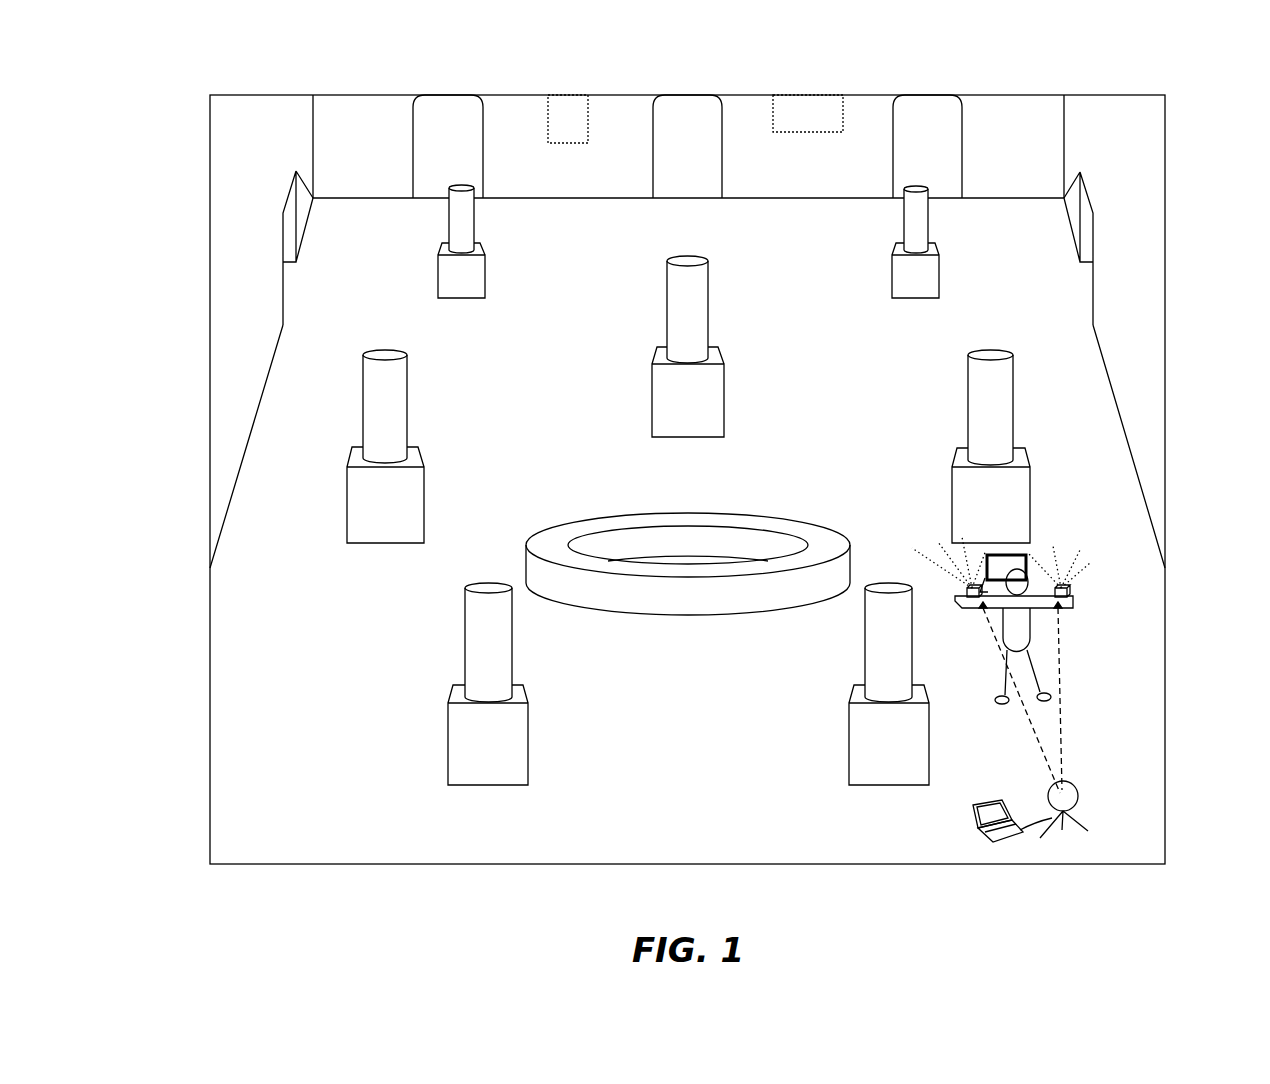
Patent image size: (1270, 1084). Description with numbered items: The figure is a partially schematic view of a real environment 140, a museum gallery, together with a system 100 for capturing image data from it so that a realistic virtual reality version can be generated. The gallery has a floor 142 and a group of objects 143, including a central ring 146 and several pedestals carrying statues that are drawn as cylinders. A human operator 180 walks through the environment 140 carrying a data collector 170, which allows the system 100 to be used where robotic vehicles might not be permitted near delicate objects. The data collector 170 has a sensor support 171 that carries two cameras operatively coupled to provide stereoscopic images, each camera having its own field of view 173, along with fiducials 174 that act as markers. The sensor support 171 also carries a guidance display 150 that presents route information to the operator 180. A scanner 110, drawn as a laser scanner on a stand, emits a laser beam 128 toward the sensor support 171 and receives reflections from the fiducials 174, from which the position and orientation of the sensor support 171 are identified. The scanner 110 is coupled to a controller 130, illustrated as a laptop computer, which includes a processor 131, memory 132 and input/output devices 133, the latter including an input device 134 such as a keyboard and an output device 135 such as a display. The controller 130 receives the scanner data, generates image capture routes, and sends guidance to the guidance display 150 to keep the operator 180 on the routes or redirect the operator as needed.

The system 100 is at (1128, 665).
The scanner 110 is at (1098, 795).
The laser beam 128 is at (1078, 725).
The controller 130 is at (1015, 829).
The processor 131 is at (975, 836).
The memory 132 is at (1013, 818).
The input/output devices 133 is at (1028, 841).
The input device 134 is at (1012, 838).
The output device 135 is at (990, 808).
The real environment 140 is at (1140, 253).
The floor 142 is at (789, 324).
The objects 143 is at (447, 417).
The central ring 146 is at (625, 600).
The guidance display 150 is at (1004, 550).
The data collector 170 is at (1018, 580).
The sensor support 171 is at (1078, 604).
The field of view 173 is at (1062, 552).
The fiducials 174 is at (985, 612).
The human operator 180 is at (1040, 644).